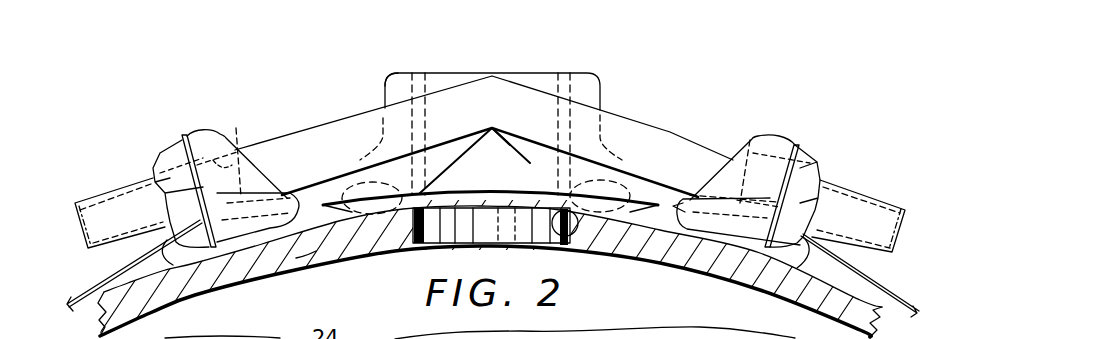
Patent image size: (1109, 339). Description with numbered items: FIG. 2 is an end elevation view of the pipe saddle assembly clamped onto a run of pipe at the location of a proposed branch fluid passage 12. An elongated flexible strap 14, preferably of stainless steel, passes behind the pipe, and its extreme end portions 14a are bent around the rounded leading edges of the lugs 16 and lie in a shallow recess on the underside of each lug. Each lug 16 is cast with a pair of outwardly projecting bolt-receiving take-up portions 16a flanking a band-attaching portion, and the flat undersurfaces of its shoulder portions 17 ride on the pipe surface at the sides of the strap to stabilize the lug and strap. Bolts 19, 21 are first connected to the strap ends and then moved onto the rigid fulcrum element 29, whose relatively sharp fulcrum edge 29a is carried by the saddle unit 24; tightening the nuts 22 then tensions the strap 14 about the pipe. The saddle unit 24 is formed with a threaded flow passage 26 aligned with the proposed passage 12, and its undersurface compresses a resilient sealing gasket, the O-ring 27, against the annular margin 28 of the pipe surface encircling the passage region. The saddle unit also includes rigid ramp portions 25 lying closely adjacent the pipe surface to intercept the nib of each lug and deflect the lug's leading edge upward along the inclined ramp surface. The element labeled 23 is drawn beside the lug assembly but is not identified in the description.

The fluid passage 12 is at (412, 248).
The elongated flexible strap 14 is at (90, 288).
The extreme end portions of strap 14a is at (245, 272).
The lug 16 is at (235, 336).
The bolt-receiving take-up portions 16a is at (205, 140).
The shoulder portions 17 is at (240, 118).
The bolt 19 is at (305, 131).
The bolt 21 is at (485, 102).
The nut 22 is at (158, 154).
The washer plate 23 is at (182, 136).
The saddle unit 24 is at (383, 73).
The rigid ramp portions 25 is at (325, 203).
The threaded flow passage 26 is at (547, 83).
The O-ring 27 is at (306, 265).
The annular margin 28 is at (567, 253).
The rigid fulcrum element 29 is at (476, 184).
The fulcrum edge 29a is at (488, 133).